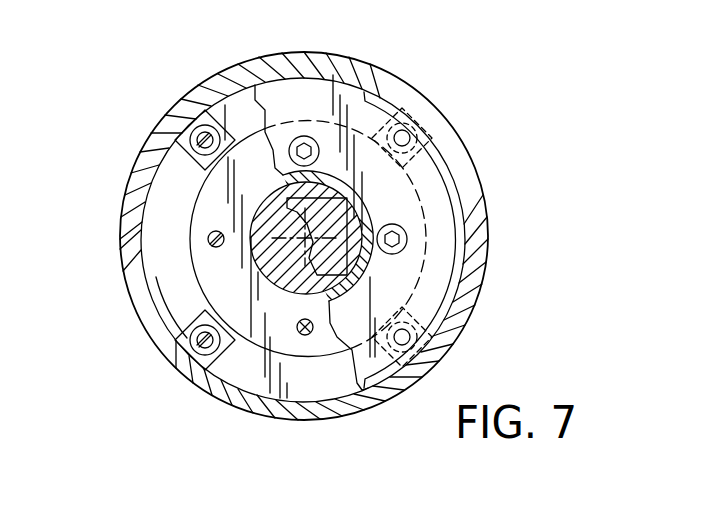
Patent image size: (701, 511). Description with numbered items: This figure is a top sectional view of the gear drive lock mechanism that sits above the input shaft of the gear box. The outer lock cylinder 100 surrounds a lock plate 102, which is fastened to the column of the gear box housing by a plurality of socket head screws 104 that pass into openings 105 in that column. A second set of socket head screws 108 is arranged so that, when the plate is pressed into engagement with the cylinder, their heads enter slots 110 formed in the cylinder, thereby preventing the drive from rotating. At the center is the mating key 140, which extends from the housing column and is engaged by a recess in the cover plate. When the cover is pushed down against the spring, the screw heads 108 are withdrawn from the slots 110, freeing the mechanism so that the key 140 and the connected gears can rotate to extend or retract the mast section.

The outer lock cylinder 100 is at (140, 325).
The lock plate 102 is at (452, 258).
The socket head screws 104 is at (308, 137).
The openings 105 is at (208, 235).
The socket head screws 108 is at (202, 126).
The slots 110 is at (181, 129).
The mating key 140 is at (352, 208).